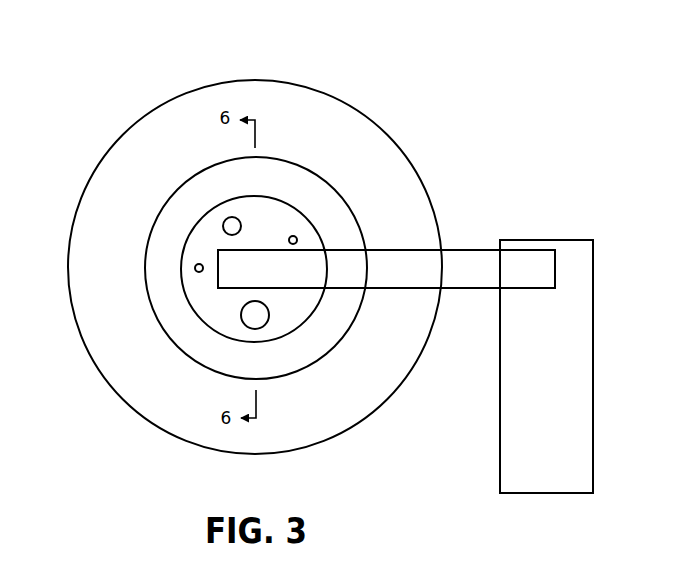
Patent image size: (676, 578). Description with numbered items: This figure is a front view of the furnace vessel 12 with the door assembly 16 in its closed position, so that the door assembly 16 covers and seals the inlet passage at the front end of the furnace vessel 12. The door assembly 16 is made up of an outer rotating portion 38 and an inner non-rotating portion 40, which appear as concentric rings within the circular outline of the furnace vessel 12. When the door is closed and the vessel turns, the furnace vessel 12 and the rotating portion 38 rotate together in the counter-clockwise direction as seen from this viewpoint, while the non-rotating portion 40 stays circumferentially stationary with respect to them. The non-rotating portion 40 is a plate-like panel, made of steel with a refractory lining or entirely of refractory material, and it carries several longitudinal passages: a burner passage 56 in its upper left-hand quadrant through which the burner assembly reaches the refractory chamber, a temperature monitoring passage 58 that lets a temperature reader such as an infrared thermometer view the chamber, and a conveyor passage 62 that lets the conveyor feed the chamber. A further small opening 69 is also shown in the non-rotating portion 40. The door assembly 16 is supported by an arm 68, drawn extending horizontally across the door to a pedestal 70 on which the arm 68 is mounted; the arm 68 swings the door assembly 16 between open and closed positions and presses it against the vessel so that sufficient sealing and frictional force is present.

The furnace vessel 12 is at (100, 193).
The door assembly 16 is at (299, 138).
The rotating portion 38 is at (332, 315).
The non-rotating portion 40 is at (208, 305).
The burner passage 56 is at (227, 217).
The temperature monitoring passage 58 is at (196, 266).
The conveyor passage 62 is at (262, 322).
The pin hole 69 is at (296, 236).
The arm 68 is at (478, 260).
The pedestal 70 is at (572, 250).